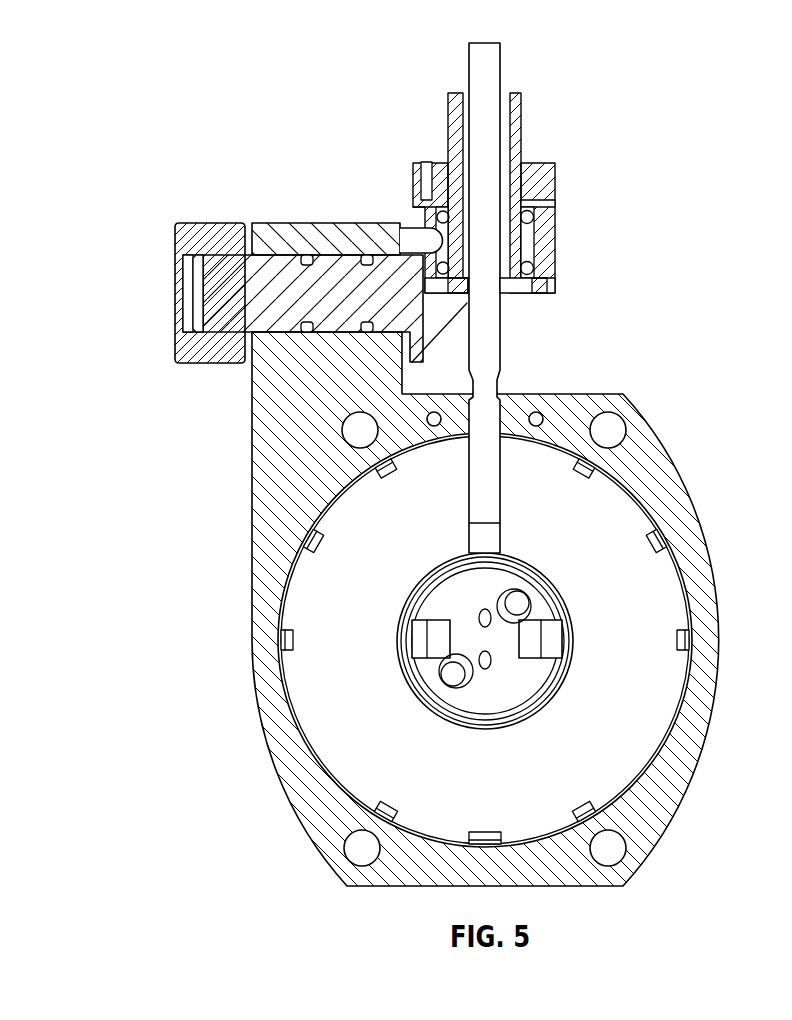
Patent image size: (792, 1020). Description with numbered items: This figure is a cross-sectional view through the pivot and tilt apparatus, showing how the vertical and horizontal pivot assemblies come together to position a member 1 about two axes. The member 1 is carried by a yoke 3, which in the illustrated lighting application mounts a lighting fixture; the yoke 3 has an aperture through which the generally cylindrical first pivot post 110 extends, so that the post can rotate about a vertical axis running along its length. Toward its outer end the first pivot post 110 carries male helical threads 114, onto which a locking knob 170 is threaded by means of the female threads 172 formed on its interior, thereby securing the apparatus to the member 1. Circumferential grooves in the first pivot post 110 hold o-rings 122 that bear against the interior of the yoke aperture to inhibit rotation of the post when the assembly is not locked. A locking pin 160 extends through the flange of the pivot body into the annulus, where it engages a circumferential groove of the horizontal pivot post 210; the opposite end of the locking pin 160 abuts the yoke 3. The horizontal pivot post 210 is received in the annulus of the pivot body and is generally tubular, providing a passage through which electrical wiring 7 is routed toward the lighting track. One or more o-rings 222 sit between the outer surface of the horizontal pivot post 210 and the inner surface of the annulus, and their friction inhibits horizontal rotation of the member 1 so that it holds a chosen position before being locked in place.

The member 1 is at (453, 609).
The yoke 3 is at (240, 393).
The electrical wiring 7 is at (492, 345).
The first pivot post 110 is at (363, 228).
The male helical threads 114 is at (155, 257).
The o-rings 122 is at (367, 256).
The locking pin 160 is at (410, 228).
The locking knob 170 is at (205, 233).
The female threads 172 is at (193, 262).
The horizontal pivot post 210 is at (533, 293).
The o-ring 222 is at (533, 222).